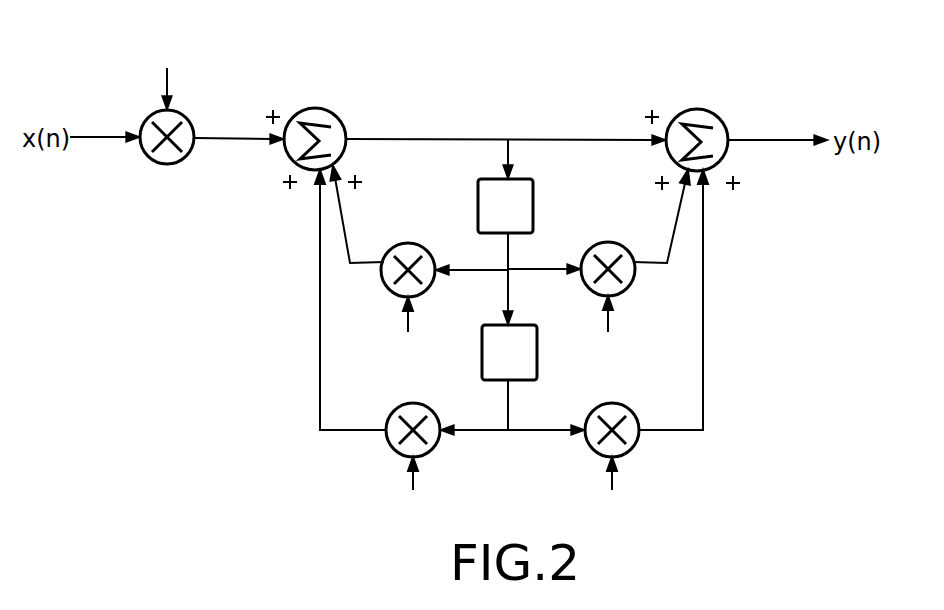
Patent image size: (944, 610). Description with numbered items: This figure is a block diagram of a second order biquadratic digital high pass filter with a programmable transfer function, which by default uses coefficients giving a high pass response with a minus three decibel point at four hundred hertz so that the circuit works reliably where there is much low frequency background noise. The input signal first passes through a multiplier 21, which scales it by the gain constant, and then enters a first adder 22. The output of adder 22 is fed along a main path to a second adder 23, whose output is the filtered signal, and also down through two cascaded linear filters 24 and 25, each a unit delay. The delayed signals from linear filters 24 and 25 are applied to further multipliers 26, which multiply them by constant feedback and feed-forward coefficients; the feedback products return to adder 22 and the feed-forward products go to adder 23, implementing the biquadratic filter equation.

The multiplier 21 is at (187, 118).
The adder 22 is at (343, 123).
The adder 23 is at (725, 123).
The linear filter 24 is at (533, 207).
The linear filter 25 is at (531, 380).
The further multipliers 26 is at (381, 277).